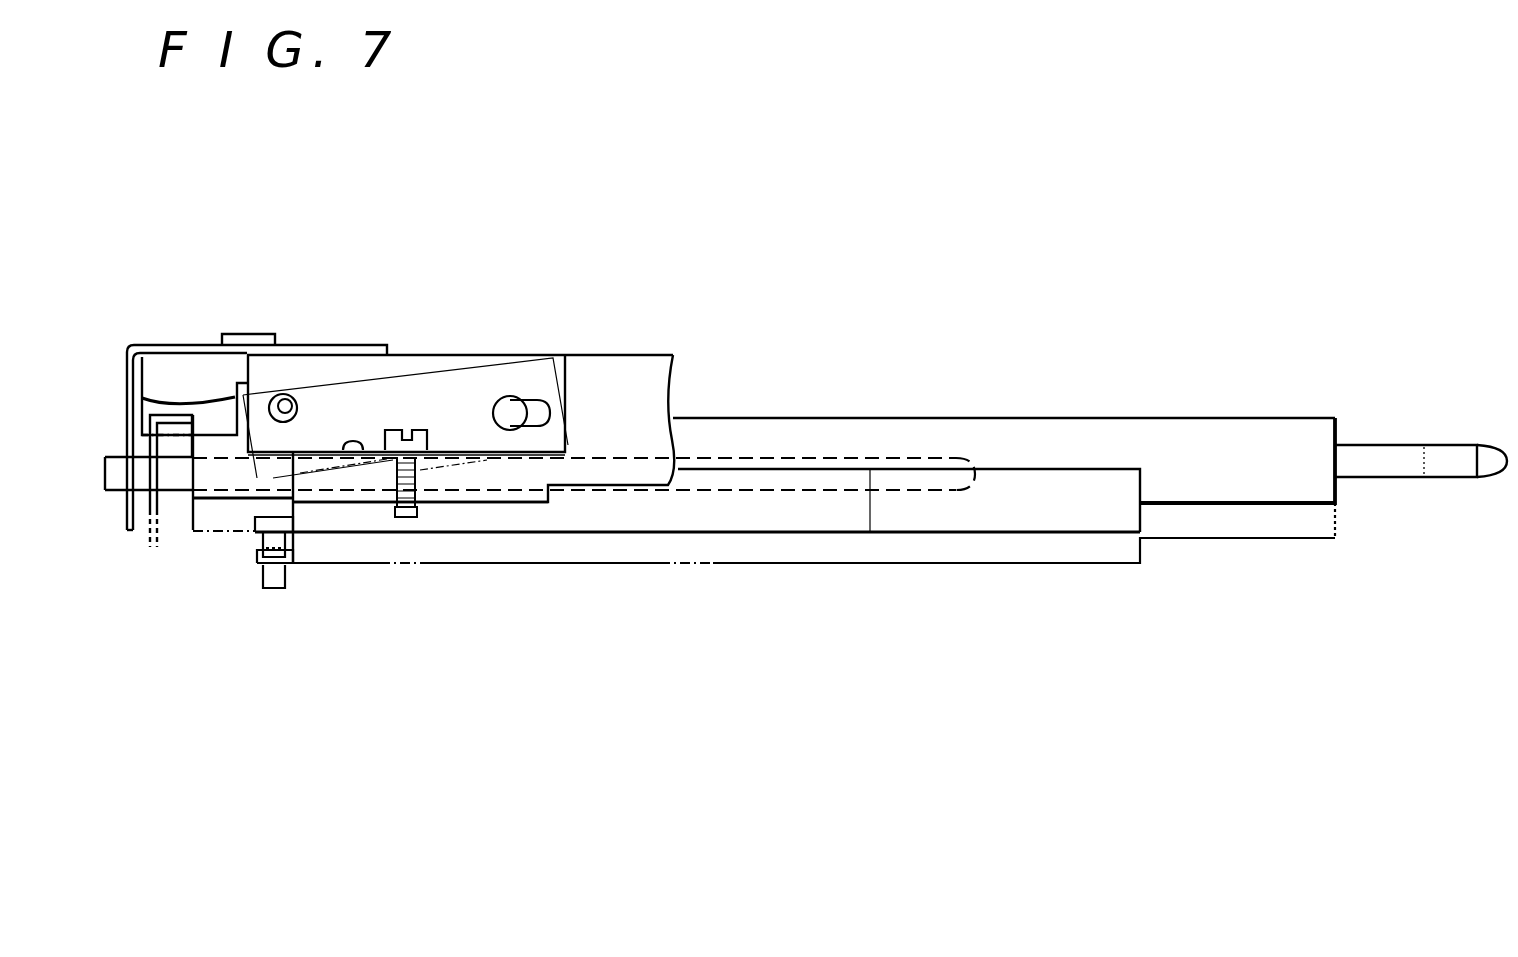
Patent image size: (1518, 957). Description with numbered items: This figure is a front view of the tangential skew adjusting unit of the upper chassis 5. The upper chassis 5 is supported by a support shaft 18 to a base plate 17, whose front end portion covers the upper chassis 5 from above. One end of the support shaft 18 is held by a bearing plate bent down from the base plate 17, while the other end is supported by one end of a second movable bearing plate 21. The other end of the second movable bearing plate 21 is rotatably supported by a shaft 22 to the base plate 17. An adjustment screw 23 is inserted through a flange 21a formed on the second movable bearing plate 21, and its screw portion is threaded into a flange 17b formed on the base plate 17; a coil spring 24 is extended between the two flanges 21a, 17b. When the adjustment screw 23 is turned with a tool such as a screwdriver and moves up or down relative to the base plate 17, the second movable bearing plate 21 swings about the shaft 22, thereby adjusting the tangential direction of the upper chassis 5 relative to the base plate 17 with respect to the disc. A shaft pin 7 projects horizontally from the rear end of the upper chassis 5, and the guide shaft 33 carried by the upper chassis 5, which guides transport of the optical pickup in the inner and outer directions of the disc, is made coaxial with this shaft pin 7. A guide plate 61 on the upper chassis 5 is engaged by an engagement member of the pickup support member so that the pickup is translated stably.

The upper chassis 5 is at (1246, 418).
The shaft pin 7 is at (1392, 445).
The base plate 17 is at (635, 355).
The flange 17b is at (493, 510).
The support shaft 18 is at (290, 395).
The second movable bearing plate 21 is at (398, 377).
The flange 21a is at (345, 453).
The shaft 22 is at (510, 396).
The adjustment screw 23 is at (415, 430).
The coil spring 24 is at (391, 480).
The guide shaft 33 is at (802, 458).
The guide plate 61 is at (813, 523).